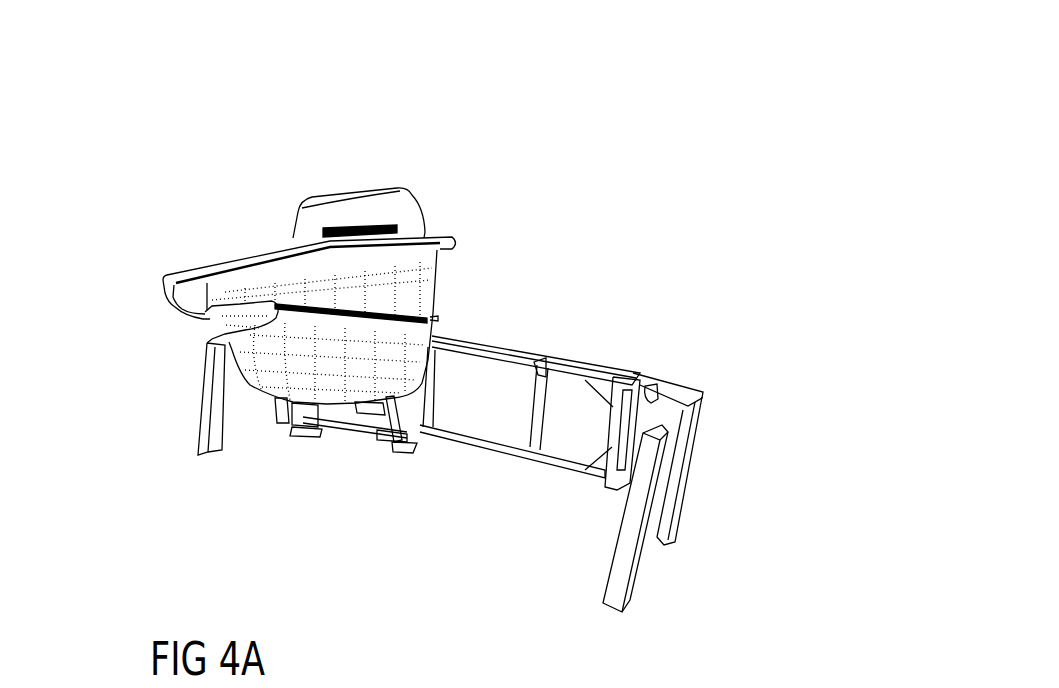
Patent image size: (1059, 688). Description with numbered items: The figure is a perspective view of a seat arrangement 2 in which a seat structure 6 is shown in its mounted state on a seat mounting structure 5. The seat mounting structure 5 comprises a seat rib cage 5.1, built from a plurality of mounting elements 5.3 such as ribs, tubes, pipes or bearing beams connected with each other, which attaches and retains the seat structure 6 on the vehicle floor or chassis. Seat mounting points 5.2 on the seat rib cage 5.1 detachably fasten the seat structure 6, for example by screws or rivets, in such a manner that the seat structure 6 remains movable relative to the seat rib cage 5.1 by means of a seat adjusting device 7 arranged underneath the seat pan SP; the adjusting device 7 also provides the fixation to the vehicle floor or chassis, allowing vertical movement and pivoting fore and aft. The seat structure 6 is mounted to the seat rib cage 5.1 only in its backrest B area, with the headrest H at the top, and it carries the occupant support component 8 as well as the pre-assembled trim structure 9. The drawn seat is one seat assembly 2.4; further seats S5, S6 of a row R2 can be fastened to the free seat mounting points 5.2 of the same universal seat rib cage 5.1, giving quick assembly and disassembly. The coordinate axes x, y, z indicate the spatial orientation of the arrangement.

The vehicle seat 2 is at (112, 112).
The seat assembly 2.4 is at (325, 147).
The seat mounting structure 5 is at (750, 402).
The seat rib cage 5.1 is at (568, 478).
The seat mounting points 5.2 is at (548, 360).
The mounting elements 5.3 is at (633, 517).
The seat structure 6 is at (436, 285).
The seat adjusting device 7 is at (412, 462).
The occupant support component 8 is at (170, 268).
The trim structure 9 is at (290, 222).
The row R2 is at (400, 85).
The height direction H is at (418, 160).
The backrest B is at (448, 300).
The pivot point SP is at (253, 413).
The seat S5 is at (538, 325).
The seat S6 is at (705, 303).
The x axis x is at (805, 82).
The y axis y is at (805, 82).
The z axis z is at (805, 82).